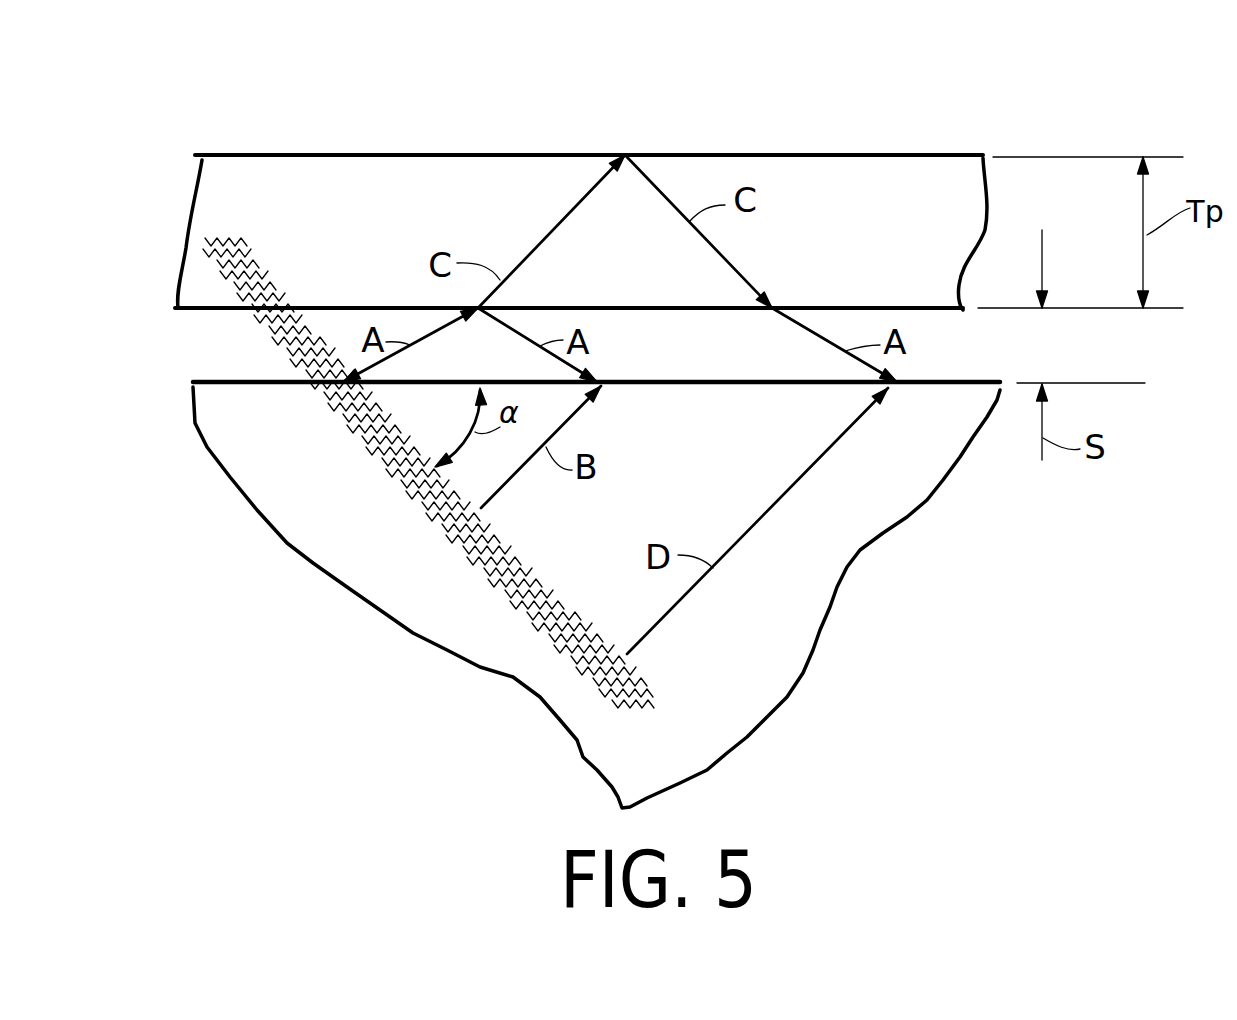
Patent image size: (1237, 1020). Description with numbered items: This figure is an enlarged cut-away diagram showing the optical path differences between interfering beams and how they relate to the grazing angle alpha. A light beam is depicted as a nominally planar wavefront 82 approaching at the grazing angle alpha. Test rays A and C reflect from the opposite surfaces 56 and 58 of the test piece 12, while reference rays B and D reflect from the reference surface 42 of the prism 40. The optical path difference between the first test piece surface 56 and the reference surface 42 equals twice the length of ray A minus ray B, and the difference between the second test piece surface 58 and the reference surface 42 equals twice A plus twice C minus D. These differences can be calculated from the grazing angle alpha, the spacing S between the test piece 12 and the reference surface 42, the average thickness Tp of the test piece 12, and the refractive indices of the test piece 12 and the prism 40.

The test piece 12 is at (375, 213).
The second test piece surface 58 is at (917, 155).
The first test piece surface 56 is at (203, 310).
The reference surface 42 is at (210, 378).
The prism 40 is at (728, 705).
The planar wavefront 82 is at (393, 465).